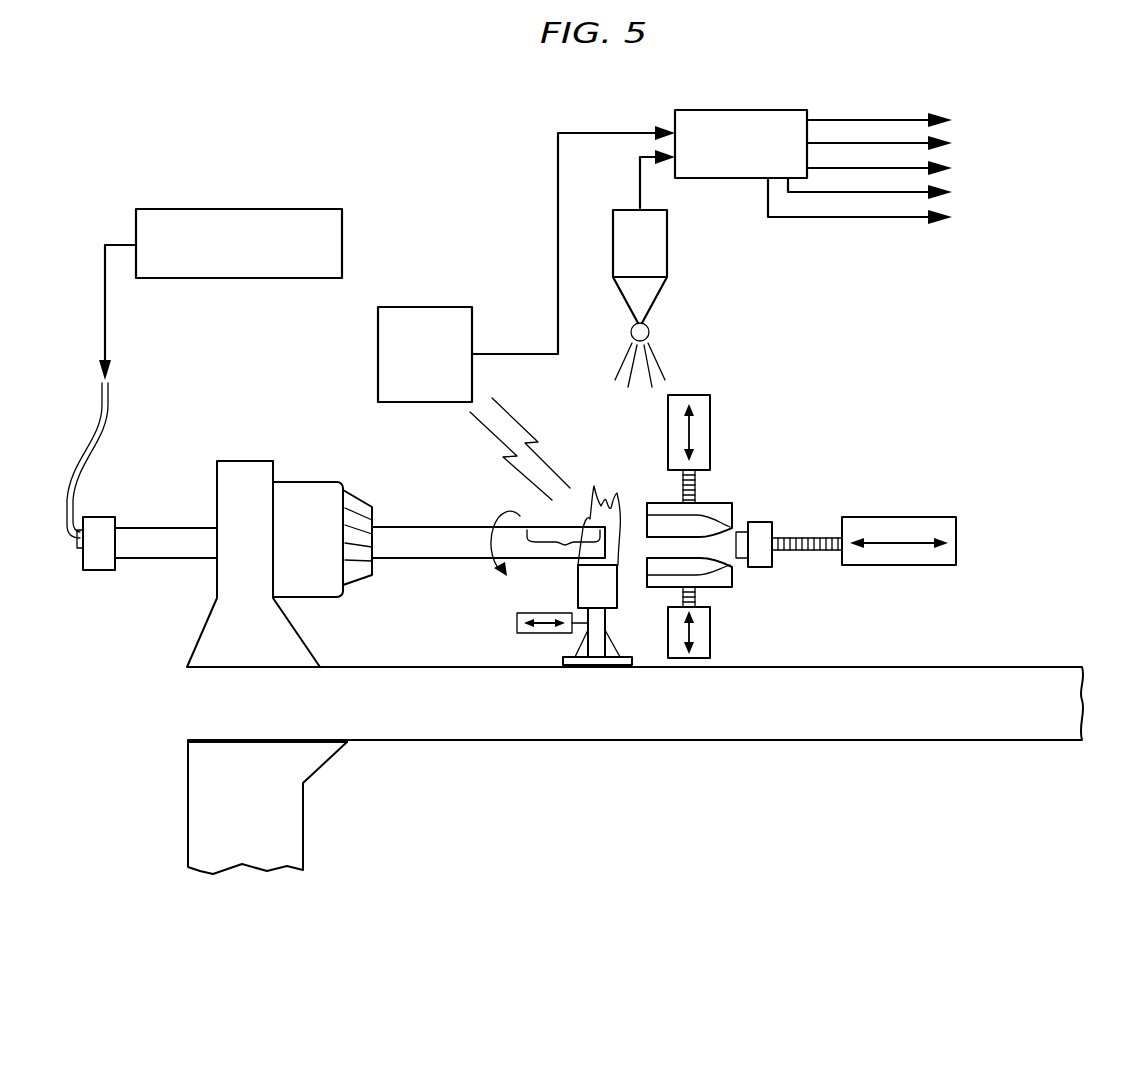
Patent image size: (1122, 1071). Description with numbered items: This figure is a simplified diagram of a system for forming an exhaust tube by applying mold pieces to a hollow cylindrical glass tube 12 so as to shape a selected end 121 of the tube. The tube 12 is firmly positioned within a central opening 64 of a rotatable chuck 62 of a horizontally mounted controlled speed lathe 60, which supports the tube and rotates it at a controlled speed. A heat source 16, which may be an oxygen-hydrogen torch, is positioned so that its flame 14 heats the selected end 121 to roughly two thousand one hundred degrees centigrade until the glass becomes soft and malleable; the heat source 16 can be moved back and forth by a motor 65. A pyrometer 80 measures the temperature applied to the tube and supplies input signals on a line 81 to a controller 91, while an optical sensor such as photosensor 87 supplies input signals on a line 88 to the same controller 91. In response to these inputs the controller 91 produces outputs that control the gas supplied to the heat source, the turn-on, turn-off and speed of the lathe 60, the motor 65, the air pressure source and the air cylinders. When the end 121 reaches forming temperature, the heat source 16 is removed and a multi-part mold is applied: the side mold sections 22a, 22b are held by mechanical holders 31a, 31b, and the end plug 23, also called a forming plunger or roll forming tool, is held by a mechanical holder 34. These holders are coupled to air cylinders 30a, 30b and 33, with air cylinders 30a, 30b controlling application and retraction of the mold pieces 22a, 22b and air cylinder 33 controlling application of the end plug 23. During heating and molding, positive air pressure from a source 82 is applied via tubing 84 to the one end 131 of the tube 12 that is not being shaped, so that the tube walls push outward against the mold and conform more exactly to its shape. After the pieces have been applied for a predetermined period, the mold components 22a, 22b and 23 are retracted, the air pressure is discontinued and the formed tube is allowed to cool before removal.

The controlled speed lathe 60 is at (110, 698).
The positive air pressure source 82 is at (252, 209).
The tubing 84 is at (100, 407).
The one end of tube 131 is at (117, 538).
The rotatable chuck 62 is at (300, 482).
The central opening 64 is at (360, 490).
The hollow cylindrical glass tube 12 is at (432, 527).
The selected end 121 is at (562, 545).
The flame 14 is at (615, 510).
The heat source 16 is at (578, 605).
The motor 65 is at (517, 628).
The photosensor 87 is at (440, 307).
The line 88 is at (630, 125).
The line 81 is at (640, 175).
The controller 91 is at (755, 110).
The pyrometer 80 is at (657, 305).
The air cylinder 30a is at (710, 410).
The mechanical holder 31a is at (683, 484).
The mold section 22a is at (724, 503).
The mold section 22b is at (725, 578).
The mechanical holder 31b is at (696, 597).
The air cylinder 30b is at (710, 658).
The end plug 23 is at (760, 522).
The mechanical holder 34 is at (824, 538).
The air cylinder 33 is at (956, 527).